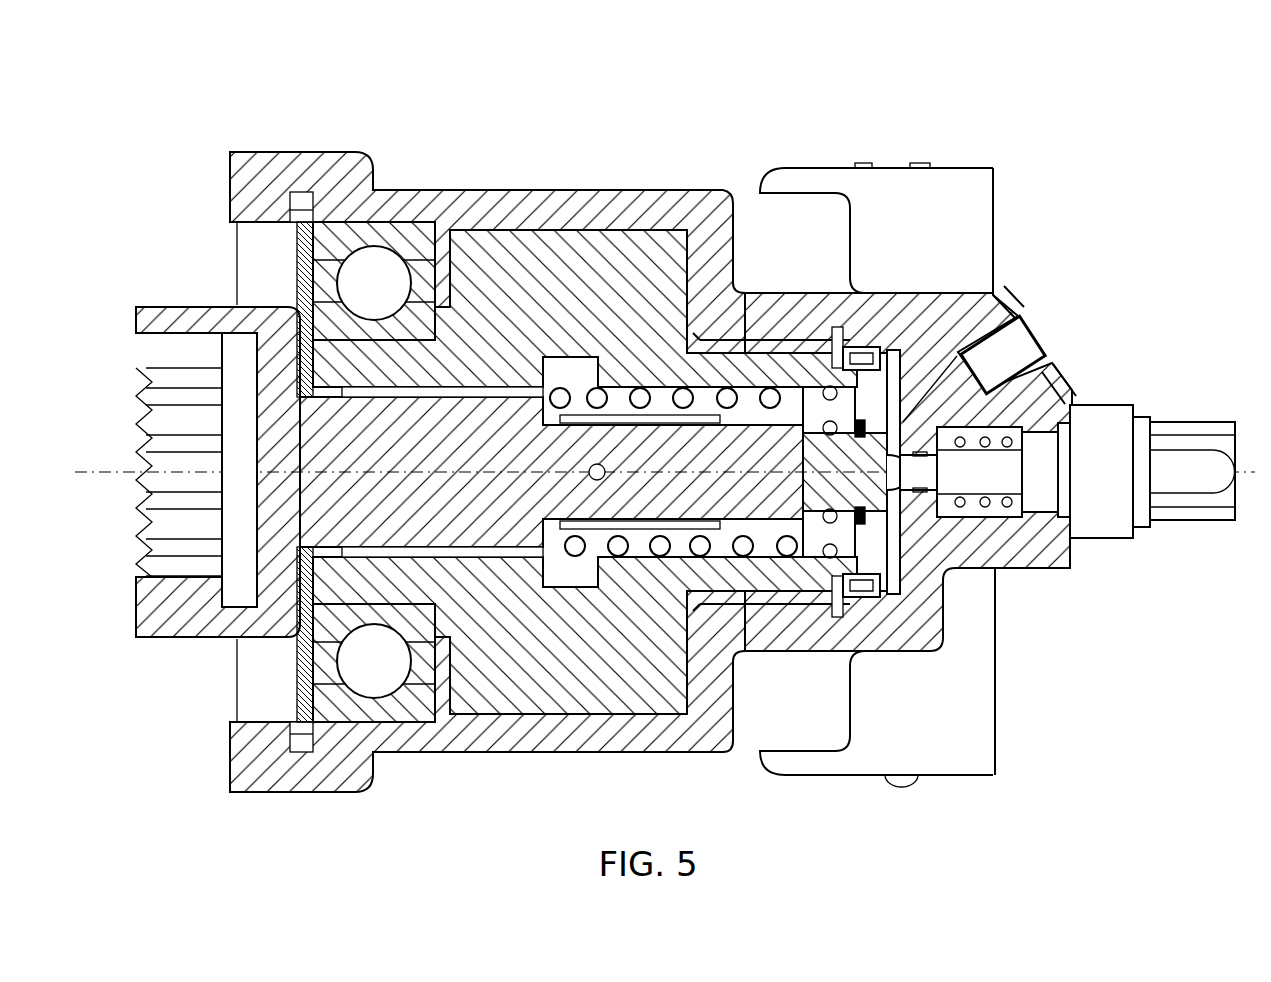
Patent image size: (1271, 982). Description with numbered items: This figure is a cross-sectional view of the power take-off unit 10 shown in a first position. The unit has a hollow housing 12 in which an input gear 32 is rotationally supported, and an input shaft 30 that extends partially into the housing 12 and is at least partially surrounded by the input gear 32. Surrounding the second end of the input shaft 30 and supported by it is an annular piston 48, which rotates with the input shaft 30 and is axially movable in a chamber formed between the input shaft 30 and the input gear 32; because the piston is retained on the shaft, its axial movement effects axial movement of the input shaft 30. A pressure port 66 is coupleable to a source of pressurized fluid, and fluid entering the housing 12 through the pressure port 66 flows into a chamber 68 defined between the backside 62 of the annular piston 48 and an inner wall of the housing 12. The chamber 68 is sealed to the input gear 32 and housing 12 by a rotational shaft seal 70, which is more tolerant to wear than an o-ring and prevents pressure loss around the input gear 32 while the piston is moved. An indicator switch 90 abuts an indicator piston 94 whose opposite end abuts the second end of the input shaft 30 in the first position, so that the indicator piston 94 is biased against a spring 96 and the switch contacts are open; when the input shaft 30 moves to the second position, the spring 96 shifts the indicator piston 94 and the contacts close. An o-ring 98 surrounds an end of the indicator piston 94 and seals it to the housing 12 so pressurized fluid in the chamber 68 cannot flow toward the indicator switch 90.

The power take-off unit 10 is at (1130, 136).
The housing 12 is at (433, 200).
The input shaft 30 is at (157, 310).
The input gear 32 is at (563, 255).
The annular piston 48 is at (840, 408).
The backside 62 is at (873, 530).
The pressure port 66 is at (1022, 337).
The chamber 68 is at (857, 527).
The rotational shaft seal 70 is at (860, 347).
The indicator switch 90 is at (1103, 410).
The indicator piston 94 is at (985, 487).
The spring 96 is at (1003, 517).
The o-ring 98 is at (925, 492).